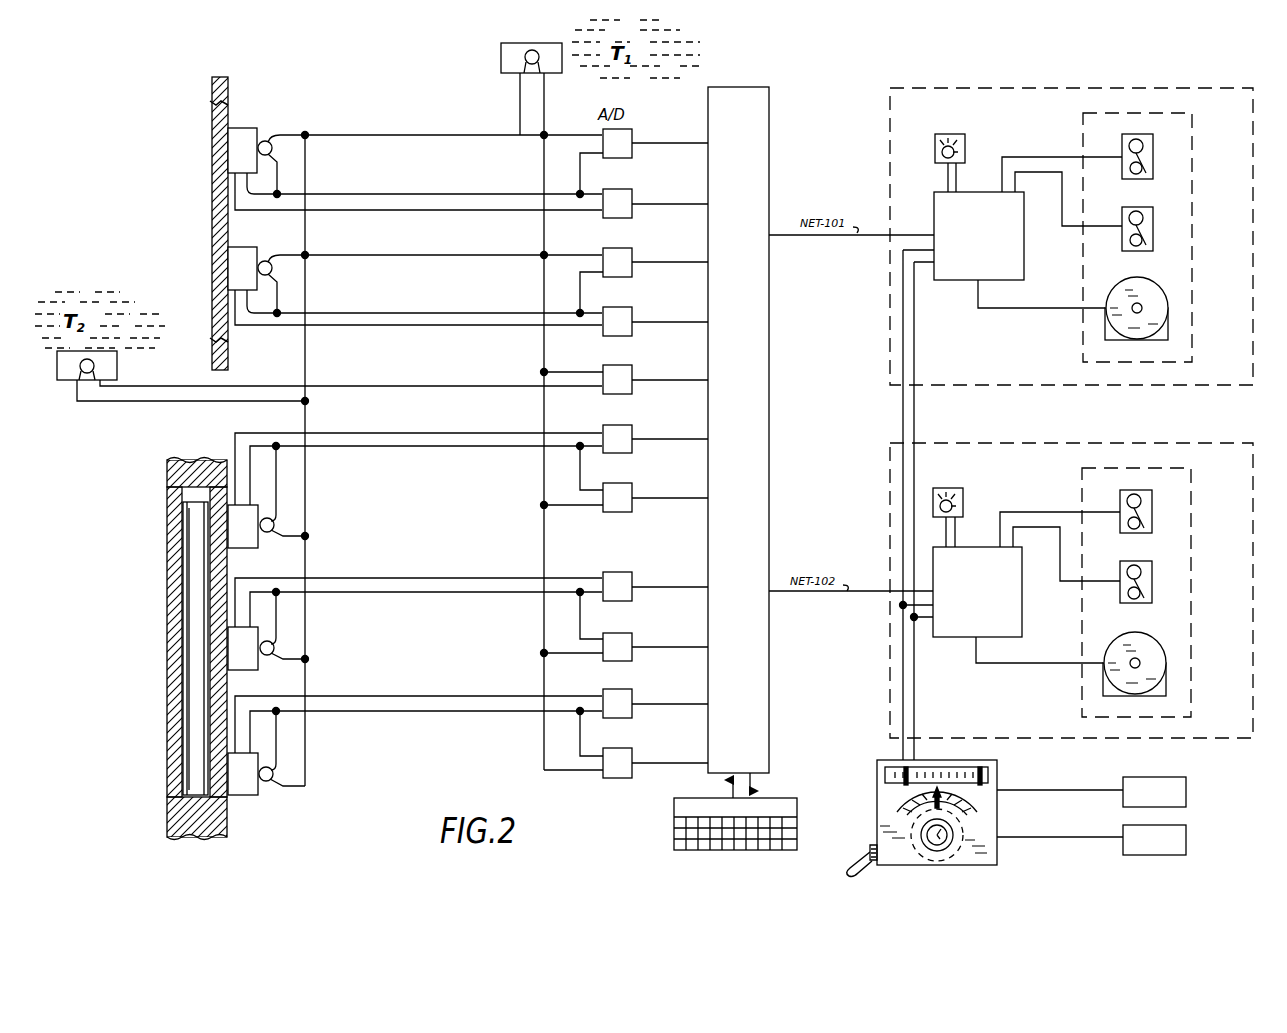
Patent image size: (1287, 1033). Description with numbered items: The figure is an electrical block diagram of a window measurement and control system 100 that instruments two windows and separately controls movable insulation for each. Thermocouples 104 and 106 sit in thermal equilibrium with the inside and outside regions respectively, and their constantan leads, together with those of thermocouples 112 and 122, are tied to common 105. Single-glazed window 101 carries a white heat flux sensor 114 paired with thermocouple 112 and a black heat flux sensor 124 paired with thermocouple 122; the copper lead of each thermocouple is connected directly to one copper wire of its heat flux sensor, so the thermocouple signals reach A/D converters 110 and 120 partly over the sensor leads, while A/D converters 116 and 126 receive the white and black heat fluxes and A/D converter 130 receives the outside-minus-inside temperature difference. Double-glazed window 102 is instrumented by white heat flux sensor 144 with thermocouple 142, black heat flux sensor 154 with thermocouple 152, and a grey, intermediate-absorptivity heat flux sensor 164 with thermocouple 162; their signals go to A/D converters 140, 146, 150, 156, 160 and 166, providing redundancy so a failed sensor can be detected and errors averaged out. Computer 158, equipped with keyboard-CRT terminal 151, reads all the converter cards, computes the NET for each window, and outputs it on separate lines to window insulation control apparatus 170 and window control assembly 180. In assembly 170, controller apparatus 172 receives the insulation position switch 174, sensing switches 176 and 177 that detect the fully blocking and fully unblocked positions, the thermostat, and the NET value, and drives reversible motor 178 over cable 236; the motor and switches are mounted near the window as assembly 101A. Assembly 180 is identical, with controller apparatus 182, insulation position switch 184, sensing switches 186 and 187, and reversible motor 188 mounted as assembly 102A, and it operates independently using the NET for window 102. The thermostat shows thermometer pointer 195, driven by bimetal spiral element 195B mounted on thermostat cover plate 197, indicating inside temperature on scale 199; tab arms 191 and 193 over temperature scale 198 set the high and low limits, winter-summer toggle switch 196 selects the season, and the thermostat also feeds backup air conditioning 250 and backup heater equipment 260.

The window measurement and control system 100 is at (836, 104).
The single-glazed window 101 is at (212, 145).
The assembly 101A is at (1158, 113).
The double-glazed window 102 is at (167, 747).
The assembly 102A is at (1168, 468).
The thermocouple 104 is at (501, 51).
The common 105 is at (309, 401).
The thermocouple 106 is at (117, 366).
The A/D converter 110 is at (627, 138).
The thermocouple 112 is at (270, 138).
The white heat flux sensor 114 is at (238, 130).
The A/D converter 116 is at (627, 198).
The A/D converter 120 is at (627, 257).
The thermocouple 122 is at (265, 261).
The black heat flux sensor 124 is at (238, 250).
The A/D converter 126 is at (627, 315).
The A/D converter 130 is at (627, 374).
The A/D converter 140 is at (627, 433).
The thermocouple 142 is at (274, 524).
The white heat flux sensor 144 is at (262, 508).
The A/D converter 146 is at (627, 491).
The A/D converter 150 is at (629, 579).
The keyboard-CRT terminal 151 is at (674, 806).
The thermocouple 152 is at (274, 647).
The black heat flux sensor 154 is at (250, 670).
The A/D converter 156 is at (629, 639).
The computer 158 is at (740, 97).
The A/D converter 160 is at (629, 698).
The thermocouple 162 is at (273, 773).
The heat flux sensor 164 is at (247, 795).
The A/D converter 166 is at (629, 758).
The window insulation control apparatus 170 is at (1013, 75).
The controller apparatus 172 is at (955, 280).
The insulation position switch 174 is at (958, 134).
The sensing switch 176 is at (1153, 157).
The sensing switch 177 is at (1153, 226).
The reversible motor 178 is at (1160, 316).
The window control assembly 180 is at (1013, 418).
The controller apparatus 182 is at (963, 637).
The insulation position switch 184 is at (953, 488).
The sensing switch 186 is at (1152, 512).
The sensing switch 187 is at (1152, 581).
The reversible motor 188 is at (1158, 663).
The temperature-limit-designating tab arm 191 is at (983, 778).
The temperature-limit-designating tab arm 193 is at (904, 782).
The thermometer pointer 195 is at (898, 803).
The bimetal spiral element 195B is at (918, 860).
The winter-summer toggle switch 196 is at (861, 854).
The thermostat cover plate 197 is at (945, 848).
The temperature scale 198 is at (937, 768).
The scale 199 is at (976, 812).
The cable 236 is at (1046, 308).
The backup air conditioning 250 is at (1186, 792).
The backup heater equipment 260 is at (1186, 840).